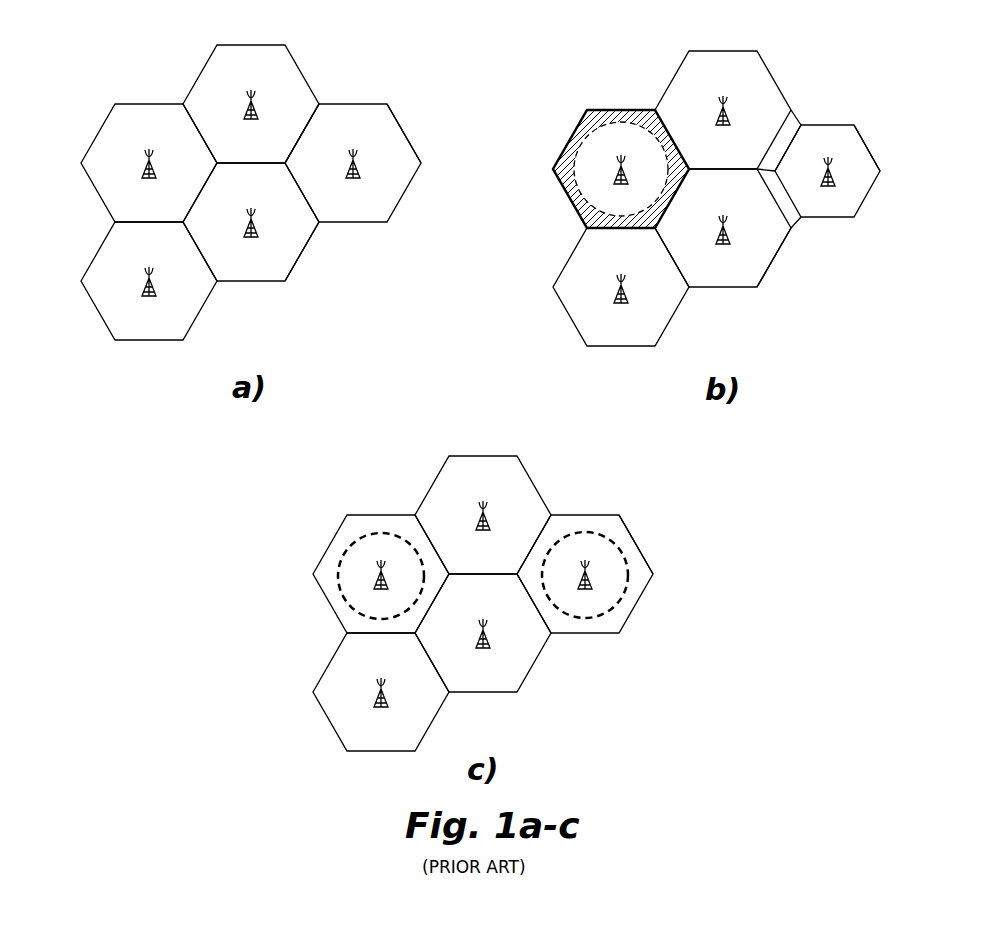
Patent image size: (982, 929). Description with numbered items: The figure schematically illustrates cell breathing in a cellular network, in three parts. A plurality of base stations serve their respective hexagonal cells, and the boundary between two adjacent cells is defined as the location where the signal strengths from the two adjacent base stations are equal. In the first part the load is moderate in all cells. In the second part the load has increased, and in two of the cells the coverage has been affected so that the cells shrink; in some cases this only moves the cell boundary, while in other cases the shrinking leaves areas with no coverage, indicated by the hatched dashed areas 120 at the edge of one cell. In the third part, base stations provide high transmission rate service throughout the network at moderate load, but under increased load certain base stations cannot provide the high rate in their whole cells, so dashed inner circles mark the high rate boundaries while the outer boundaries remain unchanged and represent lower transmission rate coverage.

The dashed areas 120 is at (586, 218).